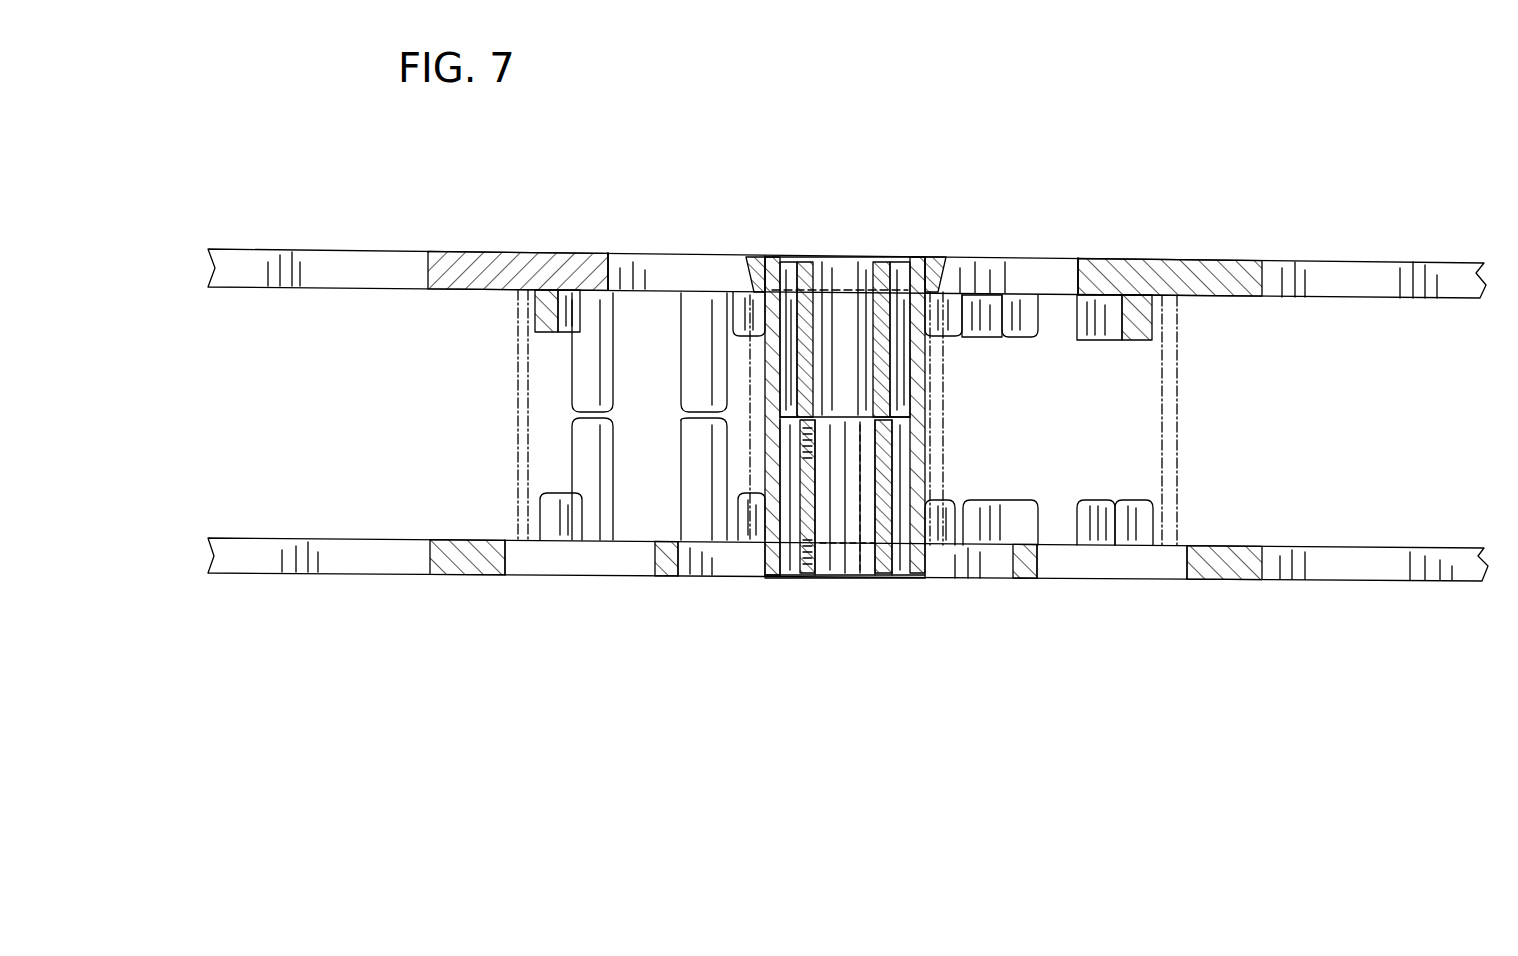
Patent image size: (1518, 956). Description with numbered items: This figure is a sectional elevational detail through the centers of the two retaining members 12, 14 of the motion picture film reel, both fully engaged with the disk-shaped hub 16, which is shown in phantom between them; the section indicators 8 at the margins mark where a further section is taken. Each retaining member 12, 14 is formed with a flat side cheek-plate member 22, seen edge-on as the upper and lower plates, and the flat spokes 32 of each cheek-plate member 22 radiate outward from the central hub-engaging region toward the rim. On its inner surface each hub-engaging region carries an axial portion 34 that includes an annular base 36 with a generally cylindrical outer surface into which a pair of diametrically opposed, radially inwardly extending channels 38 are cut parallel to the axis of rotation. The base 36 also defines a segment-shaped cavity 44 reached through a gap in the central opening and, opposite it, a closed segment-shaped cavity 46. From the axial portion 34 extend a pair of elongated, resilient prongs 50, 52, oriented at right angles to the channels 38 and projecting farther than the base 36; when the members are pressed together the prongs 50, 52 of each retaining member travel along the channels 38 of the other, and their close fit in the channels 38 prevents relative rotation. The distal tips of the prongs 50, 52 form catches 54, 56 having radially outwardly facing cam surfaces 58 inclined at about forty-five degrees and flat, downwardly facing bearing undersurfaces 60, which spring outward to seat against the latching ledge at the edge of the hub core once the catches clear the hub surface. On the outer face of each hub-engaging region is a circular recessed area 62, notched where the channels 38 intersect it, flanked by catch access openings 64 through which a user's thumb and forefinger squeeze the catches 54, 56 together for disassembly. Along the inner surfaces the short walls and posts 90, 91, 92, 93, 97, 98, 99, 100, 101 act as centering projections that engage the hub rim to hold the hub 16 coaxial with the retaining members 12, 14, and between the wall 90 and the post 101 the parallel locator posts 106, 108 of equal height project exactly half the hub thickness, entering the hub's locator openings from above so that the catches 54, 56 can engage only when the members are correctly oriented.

The section line 8- 8 is at (285, 173).
The retaining member 12 is at (1398, 304).
The retaining member 14 is at (1431, 546).
The hub 16 is at (1181, 411).
The cheek-plate member 22 is at (1206, 258).
The spokes 32 is at (330, 249).
The axial portion 34 is at (934, 412).
The annular base 36 is at (920, 480).
The channels 38 is at (790, 290).
The segment-shaped cavity 44 is at (792, 541).
The segment-shaped cavity 46 is at (907, 542).
The prong 50 is at (943, 370).
The prong 52 is at (812, 290).
The catch 54 is at (952, 268).
The catch 56 is at (784, 290).
The cam surfaces 58 is at (768, 272).
The bearing undersurfaces 60 is at (758, 302).
The recessed area 62 is at (930, 275).
The catch access openings 64 is at (622, 254).
The wall 90 is at (533, 305).
The centering projection 91 is at (988, 498).
The centering projection 92 is at (1090, 500).
The centering projection 93 is at (1125, 500).
The centering projection 97 is at (1150, 318).
The centering projection 98 is at (1093, 342).
The centering projection 99 is at (1030, 340).
The centering projection 100 is at (945, 330).
The post 101 is at (545, 497).
The locator post 106 is at (580, 401).
The locator post 108 is at (580, 461).